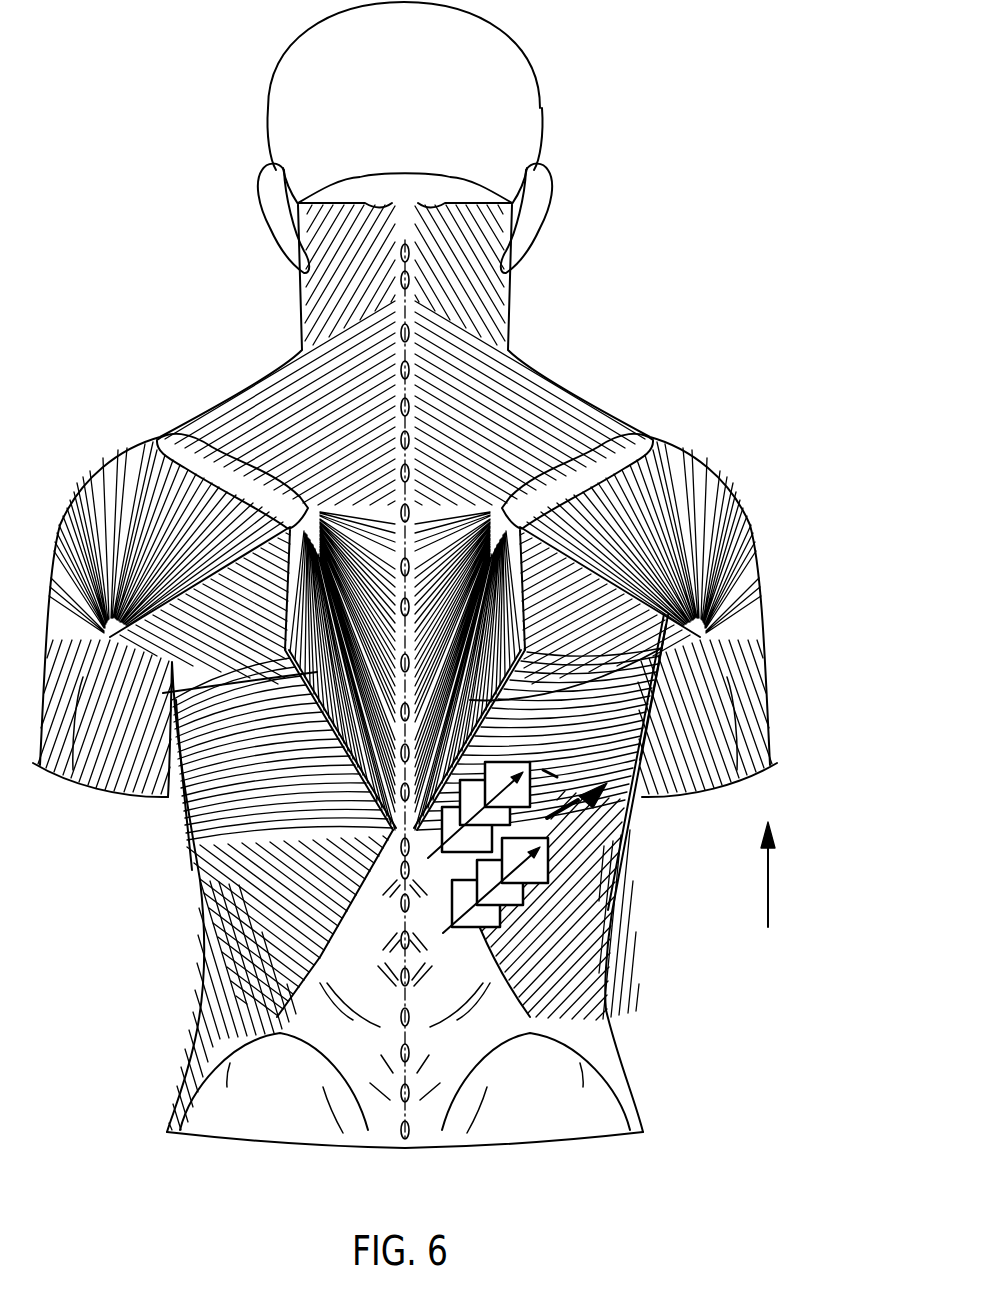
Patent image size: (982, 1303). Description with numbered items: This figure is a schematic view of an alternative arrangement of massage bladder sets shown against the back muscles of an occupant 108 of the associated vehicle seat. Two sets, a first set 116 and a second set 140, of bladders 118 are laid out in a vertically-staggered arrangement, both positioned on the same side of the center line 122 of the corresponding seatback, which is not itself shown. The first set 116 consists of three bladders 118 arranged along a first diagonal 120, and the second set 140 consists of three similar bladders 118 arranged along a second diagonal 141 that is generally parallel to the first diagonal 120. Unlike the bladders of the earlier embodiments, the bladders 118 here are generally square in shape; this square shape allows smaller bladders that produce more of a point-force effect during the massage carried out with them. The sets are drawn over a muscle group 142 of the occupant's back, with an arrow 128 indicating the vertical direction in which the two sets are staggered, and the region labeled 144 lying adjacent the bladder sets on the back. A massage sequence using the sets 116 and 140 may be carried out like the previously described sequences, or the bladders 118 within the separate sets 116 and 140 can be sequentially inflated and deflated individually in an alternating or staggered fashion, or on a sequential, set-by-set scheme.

The occupant 108 is at (618, 332).
The first set of bladders 116 is at (572, 860).
The bladders 118 is at (480, 706).
The first diagonal 120 is at (585, 918).
The center line 122 is at (407, 953).
The direction arrow 128 is at (768, 887).
The second set of bladders 140 is at (640, 782).
The second diagonal 141 is at (412, 828).
The muscle boundary 142 is at (627, 730).
The wearable device patch 144 is at (603, 820).